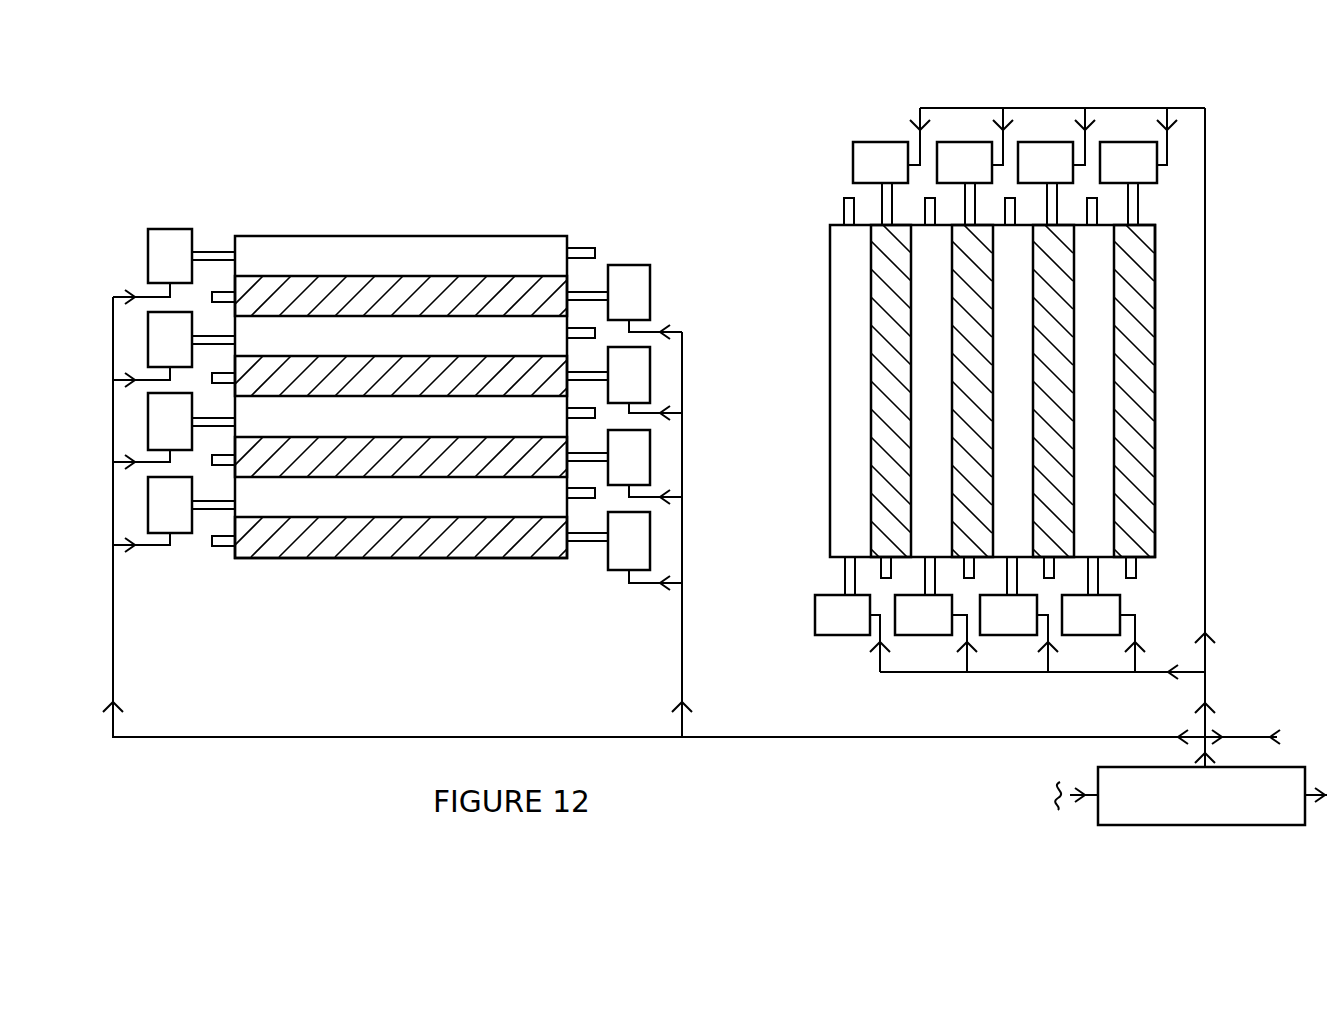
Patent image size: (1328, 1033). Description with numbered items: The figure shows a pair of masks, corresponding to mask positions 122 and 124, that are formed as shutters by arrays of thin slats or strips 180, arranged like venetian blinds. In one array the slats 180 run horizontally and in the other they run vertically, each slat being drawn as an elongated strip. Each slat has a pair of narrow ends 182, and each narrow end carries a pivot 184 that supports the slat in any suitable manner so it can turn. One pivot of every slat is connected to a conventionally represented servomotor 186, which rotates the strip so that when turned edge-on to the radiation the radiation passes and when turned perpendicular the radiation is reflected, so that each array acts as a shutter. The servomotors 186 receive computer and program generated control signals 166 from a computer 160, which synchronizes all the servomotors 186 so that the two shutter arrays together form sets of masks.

The mask 122 is at (1184, 346).
The mask 124 is at (380, 224).
The computer 160 is at (123, 707).
The control signals from computer 166 is at (112, 378).
The slats forming masks 180 is at (432, 330).
The narrow ends of slats 182 is at (232, 257).
The pivots on narrow ends 184 is at (217, 500).
The servomotors for slats 186 is at (193, 310).